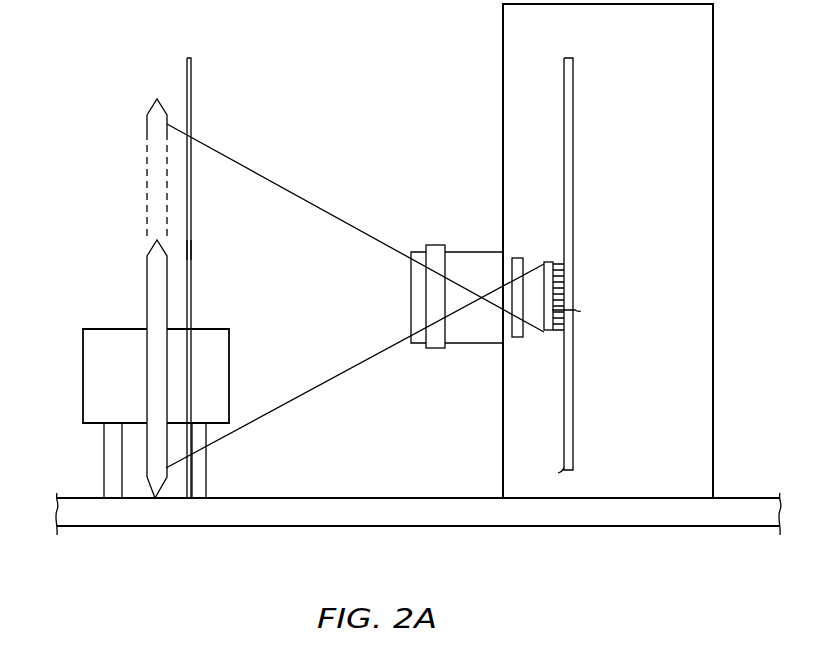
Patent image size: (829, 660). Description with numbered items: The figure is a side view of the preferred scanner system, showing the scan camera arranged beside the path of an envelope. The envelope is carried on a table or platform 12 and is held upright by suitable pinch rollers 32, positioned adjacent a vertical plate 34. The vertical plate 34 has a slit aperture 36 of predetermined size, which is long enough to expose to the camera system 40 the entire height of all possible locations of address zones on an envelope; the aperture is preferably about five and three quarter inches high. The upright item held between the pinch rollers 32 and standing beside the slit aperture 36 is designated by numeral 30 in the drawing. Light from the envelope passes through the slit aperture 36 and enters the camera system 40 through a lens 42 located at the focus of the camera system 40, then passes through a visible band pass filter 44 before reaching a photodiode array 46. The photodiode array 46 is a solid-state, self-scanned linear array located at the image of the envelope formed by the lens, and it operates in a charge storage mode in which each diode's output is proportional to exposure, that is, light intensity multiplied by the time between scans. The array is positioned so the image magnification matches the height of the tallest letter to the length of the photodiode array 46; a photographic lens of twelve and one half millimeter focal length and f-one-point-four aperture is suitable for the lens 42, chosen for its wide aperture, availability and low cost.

The table or platform 12 is at (270, 526).
The blade 30 is at (147, 292).
The pinch rollers 32 is at (82, 375).
The vertical plate 34 is at (192, 73).
The slit aperture 36 is at (192, 248).
The camera system 40 is at (714, 158).
The lens 42 is at (465, 344).
The visible band pass filter 44 is at (517, 258).
The photodiode array 46 is at (560, 263).